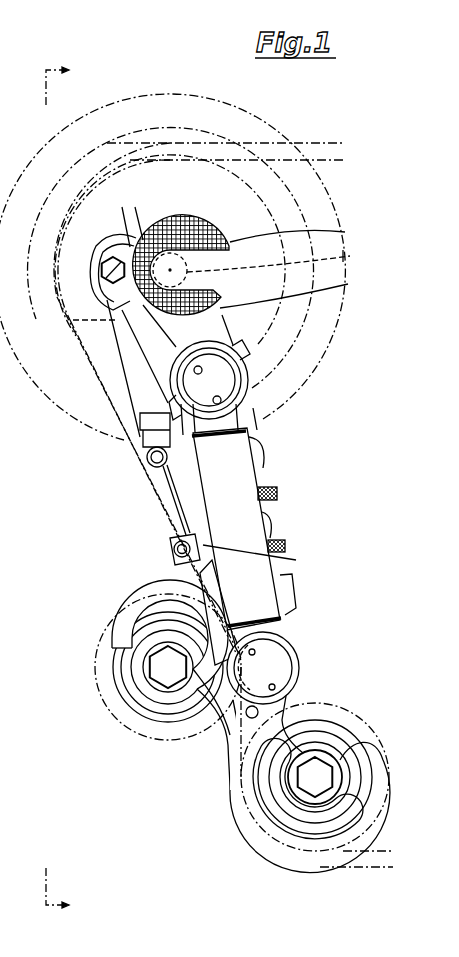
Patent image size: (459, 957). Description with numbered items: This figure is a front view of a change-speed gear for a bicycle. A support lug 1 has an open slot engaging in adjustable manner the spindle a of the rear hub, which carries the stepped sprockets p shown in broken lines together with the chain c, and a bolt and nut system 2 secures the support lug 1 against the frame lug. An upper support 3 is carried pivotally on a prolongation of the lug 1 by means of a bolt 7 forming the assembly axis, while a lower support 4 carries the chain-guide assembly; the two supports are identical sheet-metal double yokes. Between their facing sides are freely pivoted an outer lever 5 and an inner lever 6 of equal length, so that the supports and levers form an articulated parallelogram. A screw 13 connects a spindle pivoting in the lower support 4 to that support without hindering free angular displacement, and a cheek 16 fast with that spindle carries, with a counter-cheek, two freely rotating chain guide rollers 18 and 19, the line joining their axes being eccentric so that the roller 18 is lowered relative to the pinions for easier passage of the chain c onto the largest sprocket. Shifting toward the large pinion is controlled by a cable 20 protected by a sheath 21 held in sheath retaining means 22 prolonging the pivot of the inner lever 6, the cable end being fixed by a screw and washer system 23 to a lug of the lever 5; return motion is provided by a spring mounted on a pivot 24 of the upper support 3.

The support lug 1 is at (247, 281).
The spindle a is at (274, 261).
The bolt and nut system 2 is at (102, 281).
The sheath 21 is at (128, 318).
The upper support 3 is at (253, 417).
The lower support 4 is at (288, 632).
The lever 5 is at (230, 487).
The lever 6 is at (63, 489).
The bolt 7 is at (190, 389).
The screw 13 is at (278, 677).
The cheek 16 is at (237, 700).
The chain guide roller 18 is at (113, 675).
The chain guide roller 19 is at (347, 737).
The cable 20 is at (179, 516).
The sheath retaining means 22 is at (150, 462).
The screw and washer system 23 is at (177, 549).
The pivot 24 is at (172, 469).
The chain c is at (58, 263).
The sprocket p is at (282, 312).